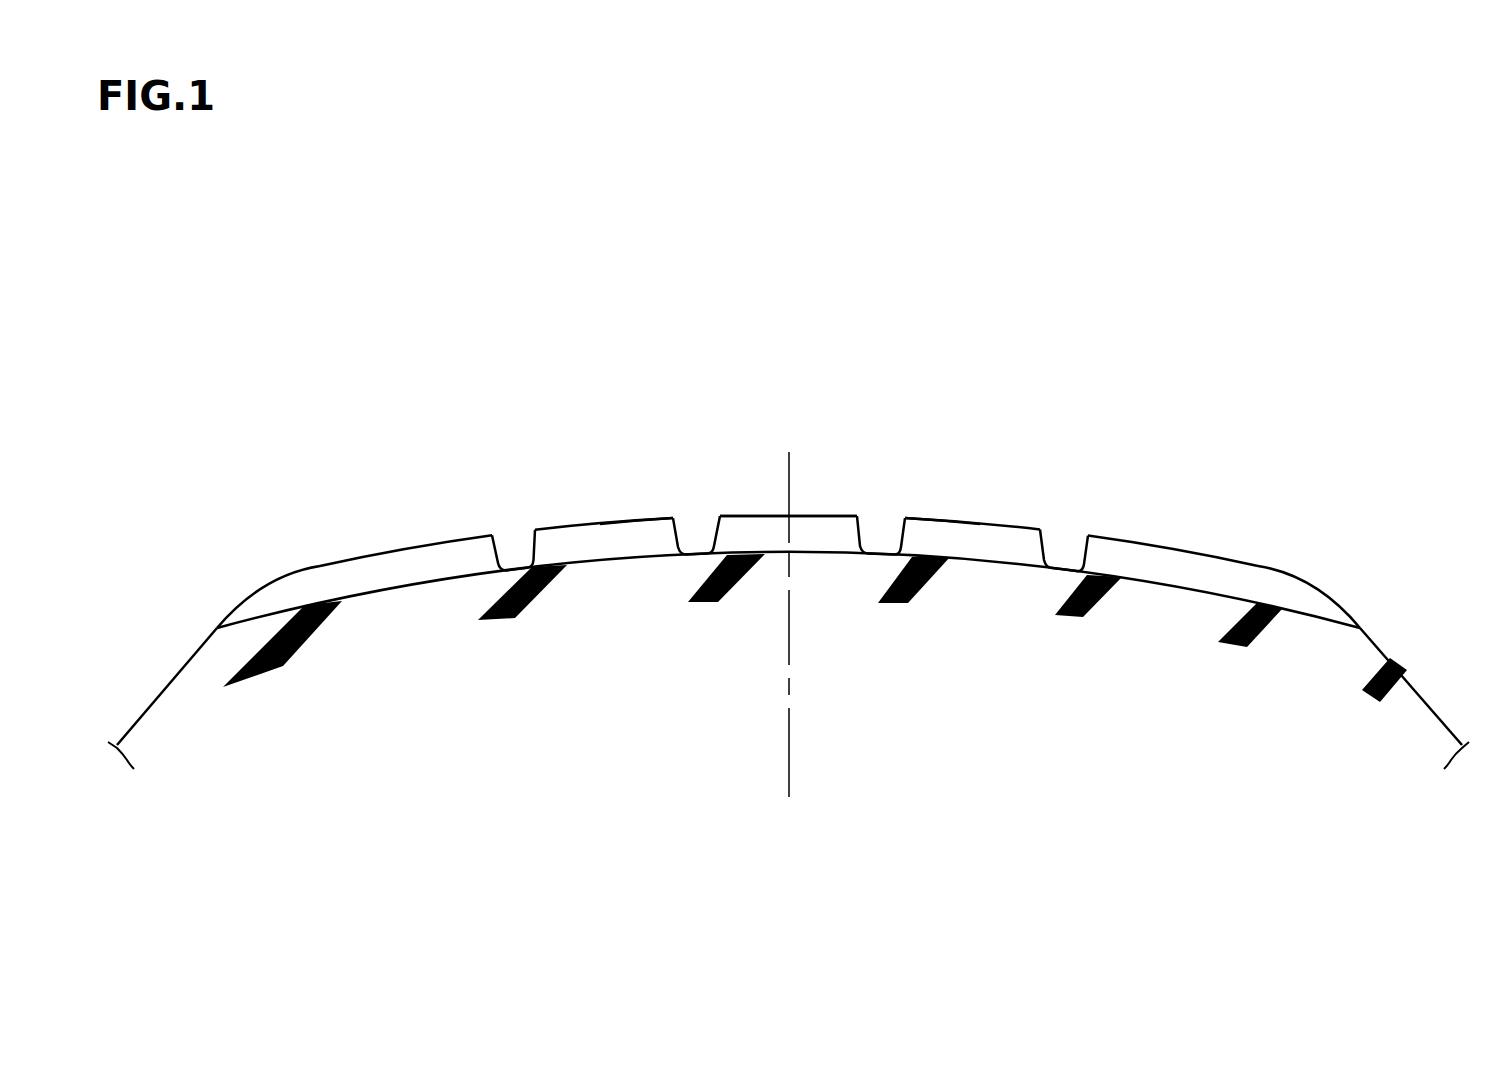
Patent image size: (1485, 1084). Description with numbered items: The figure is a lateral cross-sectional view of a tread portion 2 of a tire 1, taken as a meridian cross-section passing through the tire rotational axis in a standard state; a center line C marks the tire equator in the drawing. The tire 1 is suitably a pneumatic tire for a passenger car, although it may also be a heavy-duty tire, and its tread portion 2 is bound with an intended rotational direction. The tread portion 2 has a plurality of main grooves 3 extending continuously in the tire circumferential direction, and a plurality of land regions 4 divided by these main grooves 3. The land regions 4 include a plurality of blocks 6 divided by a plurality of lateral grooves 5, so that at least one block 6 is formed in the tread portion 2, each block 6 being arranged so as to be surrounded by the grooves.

The tire 1 is at (1138, 488).
The tread portion 2 is at (373, 493).
The main grooves 3 is at (517, 547).
The land regions 4 is at (428, 542).
The lateral grooves 5 is at (575, 560).
The blocks 6 is at (635, 519).
The tire equator center line C is at (789, 610).